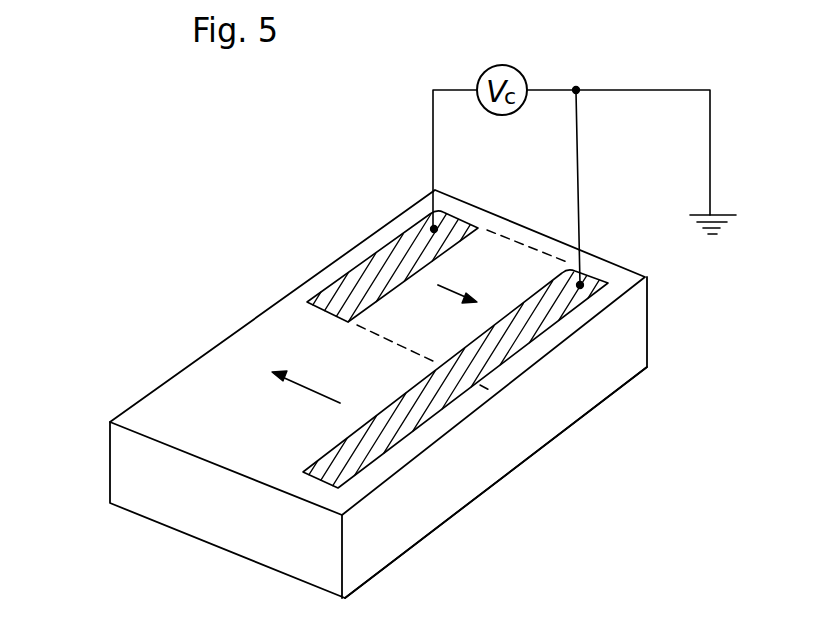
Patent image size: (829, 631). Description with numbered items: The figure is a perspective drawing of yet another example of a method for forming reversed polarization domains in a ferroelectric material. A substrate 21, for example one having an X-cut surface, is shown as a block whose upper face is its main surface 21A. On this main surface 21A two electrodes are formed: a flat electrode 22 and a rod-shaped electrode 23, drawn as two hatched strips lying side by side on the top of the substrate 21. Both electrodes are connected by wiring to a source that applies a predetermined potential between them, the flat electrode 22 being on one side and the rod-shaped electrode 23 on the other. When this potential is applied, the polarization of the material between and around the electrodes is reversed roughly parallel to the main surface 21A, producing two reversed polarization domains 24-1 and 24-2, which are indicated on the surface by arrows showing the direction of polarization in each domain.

The substrate 21 is at (633, 330).
The main surface of substrate 21A is at (233, 357).
The flat electrode 22 is at (382, 257).
The rod-shaped electrode 23 is at (498, 352).
The reversed polarization domain 24-1 is at (195, 390).
The reversed polarization domain 24-2 is at (400, 330).